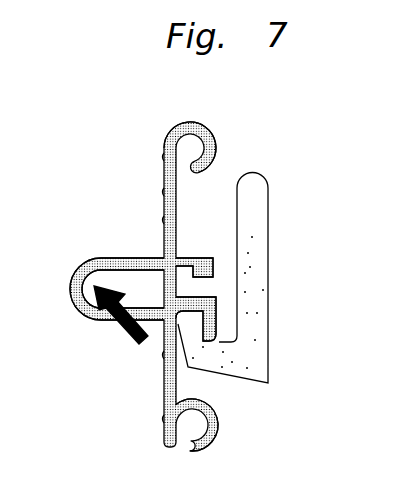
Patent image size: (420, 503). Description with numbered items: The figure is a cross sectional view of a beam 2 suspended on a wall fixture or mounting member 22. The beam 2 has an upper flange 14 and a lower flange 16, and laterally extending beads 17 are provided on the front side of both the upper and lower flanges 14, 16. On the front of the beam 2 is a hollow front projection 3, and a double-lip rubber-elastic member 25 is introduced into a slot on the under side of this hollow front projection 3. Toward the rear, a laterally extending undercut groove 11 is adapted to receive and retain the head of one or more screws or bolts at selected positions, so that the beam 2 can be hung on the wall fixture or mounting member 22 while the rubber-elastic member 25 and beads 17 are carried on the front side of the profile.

The beam 2 is at (162, 253).
The hollow front projection 3 is at (81, 265).
The undercut groove 11 is at (188, 288).
The upper flange 14 is at (163, 200).
The lower flange 16 is at (163, 372).
The laterally extending beads 17 is at (163, 157).
The wall fixture or mounting member 22 is at (249, 222).
The double-lip rubber-elastic member 25 is at (109, 328).